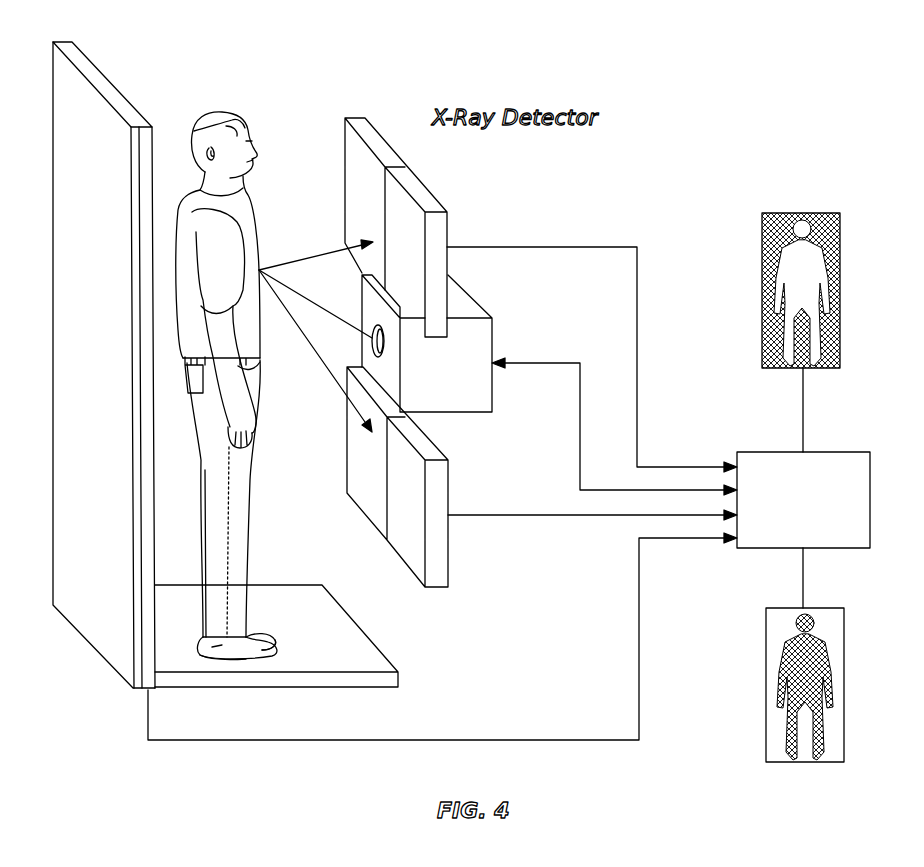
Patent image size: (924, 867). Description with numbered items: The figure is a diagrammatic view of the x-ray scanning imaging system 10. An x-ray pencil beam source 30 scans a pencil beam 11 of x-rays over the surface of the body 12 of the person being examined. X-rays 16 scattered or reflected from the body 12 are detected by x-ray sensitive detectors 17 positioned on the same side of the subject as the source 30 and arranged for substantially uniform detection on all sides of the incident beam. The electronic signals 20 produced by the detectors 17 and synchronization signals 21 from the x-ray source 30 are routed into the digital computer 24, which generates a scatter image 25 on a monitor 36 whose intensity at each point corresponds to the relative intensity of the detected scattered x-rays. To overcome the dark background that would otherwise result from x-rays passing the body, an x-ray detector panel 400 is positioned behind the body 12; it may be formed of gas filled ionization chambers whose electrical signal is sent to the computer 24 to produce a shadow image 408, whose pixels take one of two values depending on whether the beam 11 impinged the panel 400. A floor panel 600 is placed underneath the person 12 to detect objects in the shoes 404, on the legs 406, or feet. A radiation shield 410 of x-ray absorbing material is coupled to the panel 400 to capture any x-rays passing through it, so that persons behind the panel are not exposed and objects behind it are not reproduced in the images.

The imaging system 10 is at (486, 75).
The pencil beam 11 is at (330, 310).
The body 12 is at (247, 552).
The scattered x-rays 16 is at (322, 249).
The x-ray sensitive detectors 17 is at (368, 130).
The electronic signals 20 is at (593, 247).
The synchronization signals 21 is at (540, 363).
The digital computer 24 is at (780, 552).
The scatter image 25 is at (800, 415).
The x-ray pencil beam source 30 is at (468, 297).
The monitor 36 is at (760, 242).
The x-ray detector panel 400 is at (147, 678).
The shoes 404 is at (270, 632).
The legs 406 is at (205, 630).
The shadow image 408 is at (766, 652).
The radiation shield 410 is at (150, 695).
The floor panel 600 is at (385, 677).